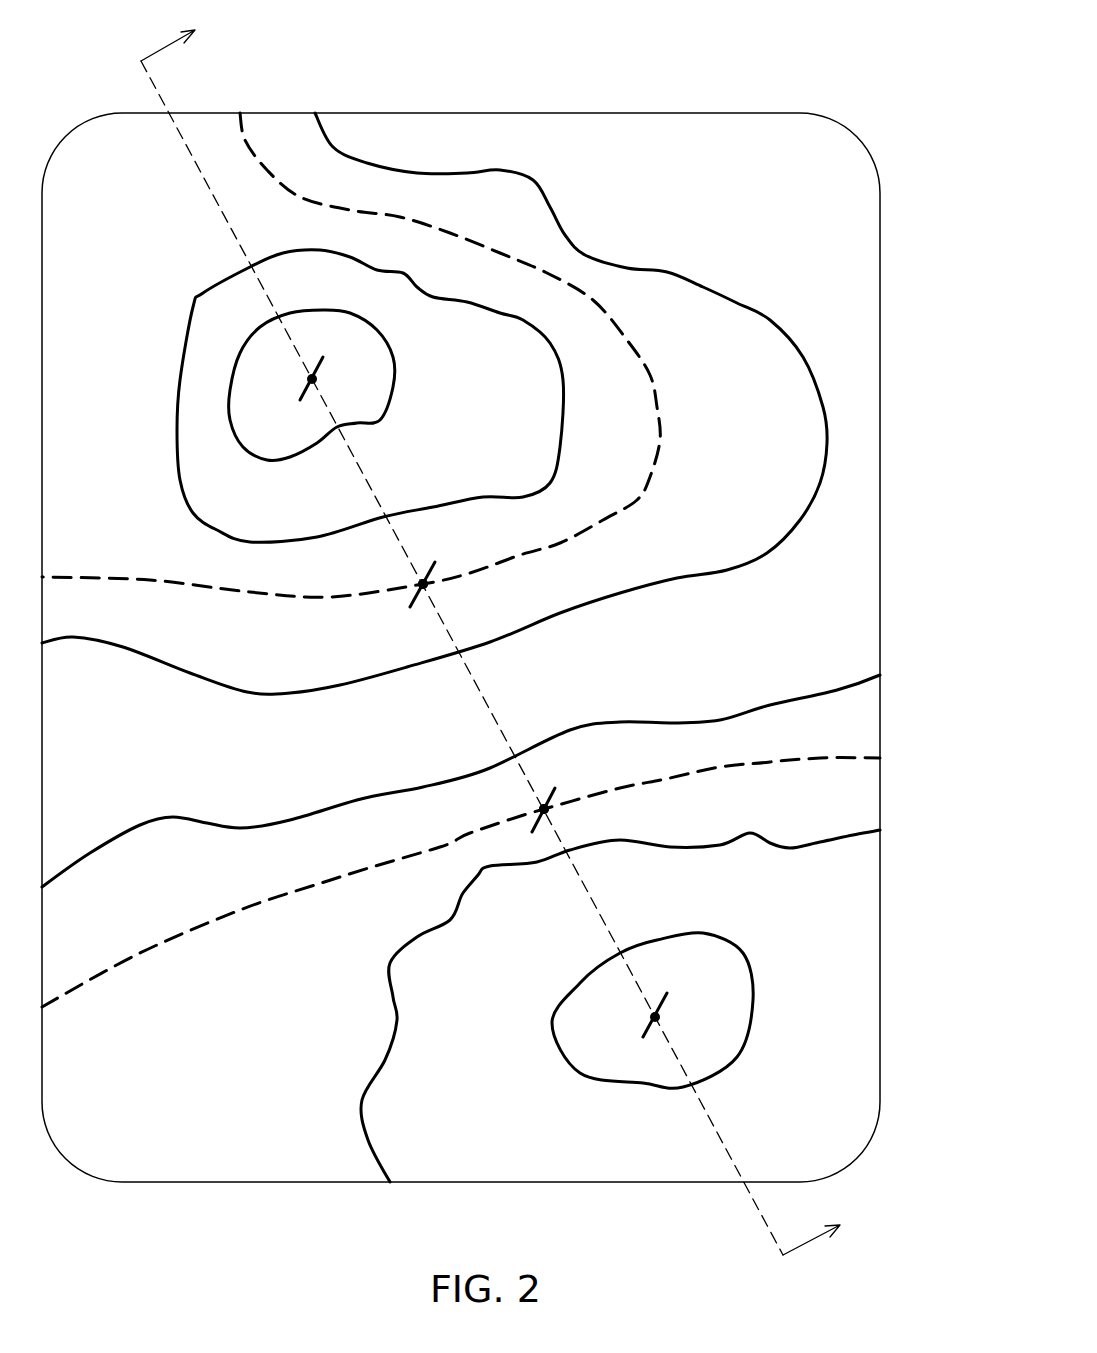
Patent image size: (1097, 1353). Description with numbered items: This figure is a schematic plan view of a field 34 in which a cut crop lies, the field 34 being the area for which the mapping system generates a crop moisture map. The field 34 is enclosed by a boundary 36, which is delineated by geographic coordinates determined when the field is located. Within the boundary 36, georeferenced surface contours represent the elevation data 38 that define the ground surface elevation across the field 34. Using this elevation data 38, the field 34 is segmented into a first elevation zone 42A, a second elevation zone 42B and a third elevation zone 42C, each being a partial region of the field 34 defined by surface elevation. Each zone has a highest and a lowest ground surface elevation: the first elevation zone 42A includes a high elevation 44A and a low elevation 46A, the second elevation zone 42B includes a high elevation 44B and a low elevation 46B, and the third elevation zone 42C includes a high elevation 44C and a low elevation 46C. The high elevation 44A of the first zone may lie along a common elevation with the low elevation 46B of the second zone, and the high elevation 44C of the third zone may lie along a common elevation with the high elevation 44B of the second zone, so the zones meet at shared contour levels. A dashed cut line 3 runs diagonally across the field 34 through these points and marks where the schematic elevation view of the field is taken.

The cut line 3 is at (502, 632).
The field 34 is at (461, 591).
The boundary 36 is at (500, 112).
The elevation data 38 is at (737, 303).
The first elevation zone 42A is at (505, 408).
The second elevation zone 42B is at (757, 652).
The third elevation zone 42C is at (747, 903).
The high elevation 44A is at (426, 583).
The high elevation 44B is at (547, 807).
The high elevation 44C is at (546, 815).
The low elevation 46A is at (312, 379).
The low elevation 46B is at (422, 590).
The low elevation 46C is at (655, 1017).